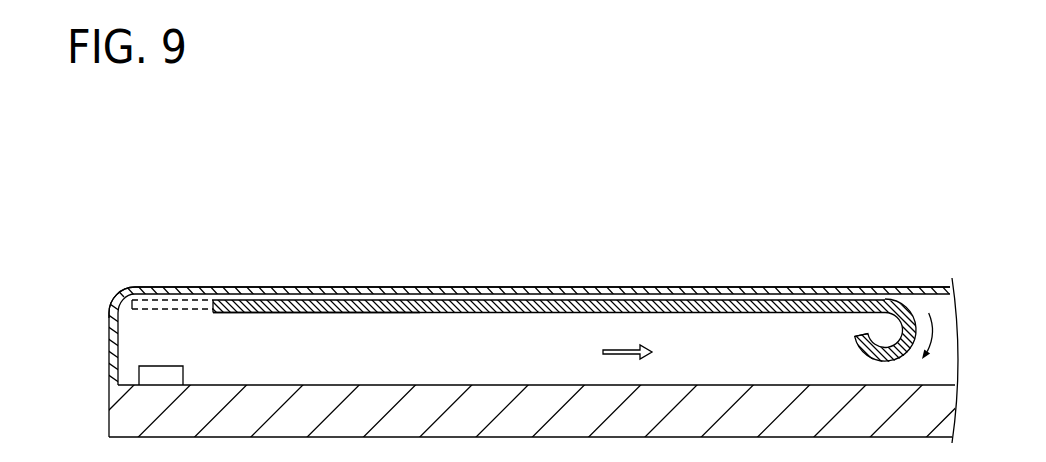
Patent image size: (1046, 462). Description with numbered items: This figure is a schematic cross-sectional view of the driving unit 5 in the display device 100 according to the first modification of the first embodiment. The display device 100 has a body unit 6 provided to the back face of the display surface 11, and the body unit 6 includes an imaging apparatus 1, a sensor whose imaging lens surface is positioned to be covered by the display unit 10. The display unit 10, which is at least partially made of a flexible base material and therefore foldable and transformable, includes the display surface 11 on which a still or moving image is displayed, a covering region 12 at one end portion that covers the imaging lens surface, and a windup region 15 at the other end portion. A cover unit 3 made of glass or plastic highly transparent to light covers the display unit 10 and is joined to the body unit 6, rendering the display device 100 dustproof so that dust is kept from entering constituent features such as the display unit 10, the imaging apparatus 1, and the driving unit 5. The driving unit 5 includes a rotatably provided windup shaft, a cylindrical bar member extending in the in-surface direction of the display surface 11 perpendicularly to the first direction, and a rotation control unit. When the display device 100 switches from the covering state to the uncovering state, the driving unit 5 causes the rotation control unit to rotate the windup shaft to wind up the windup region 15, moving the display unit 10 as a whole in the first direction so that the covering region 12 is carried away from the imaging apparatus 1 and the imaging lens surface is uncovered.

The display device 100 is at (136, 203).
The cover unit 3 is at (130, 289).
The display surface 11 is at (481, 281).
The display unit 10 is at (573, 306).
The covering region 12 is at (287, 325).
The driving unit 5 is at (887, 327).
The windup region 15 is at (860, 351).
The imaging apparatus 1 is at (139, 376).
The body unit 6 is at (118, 412).